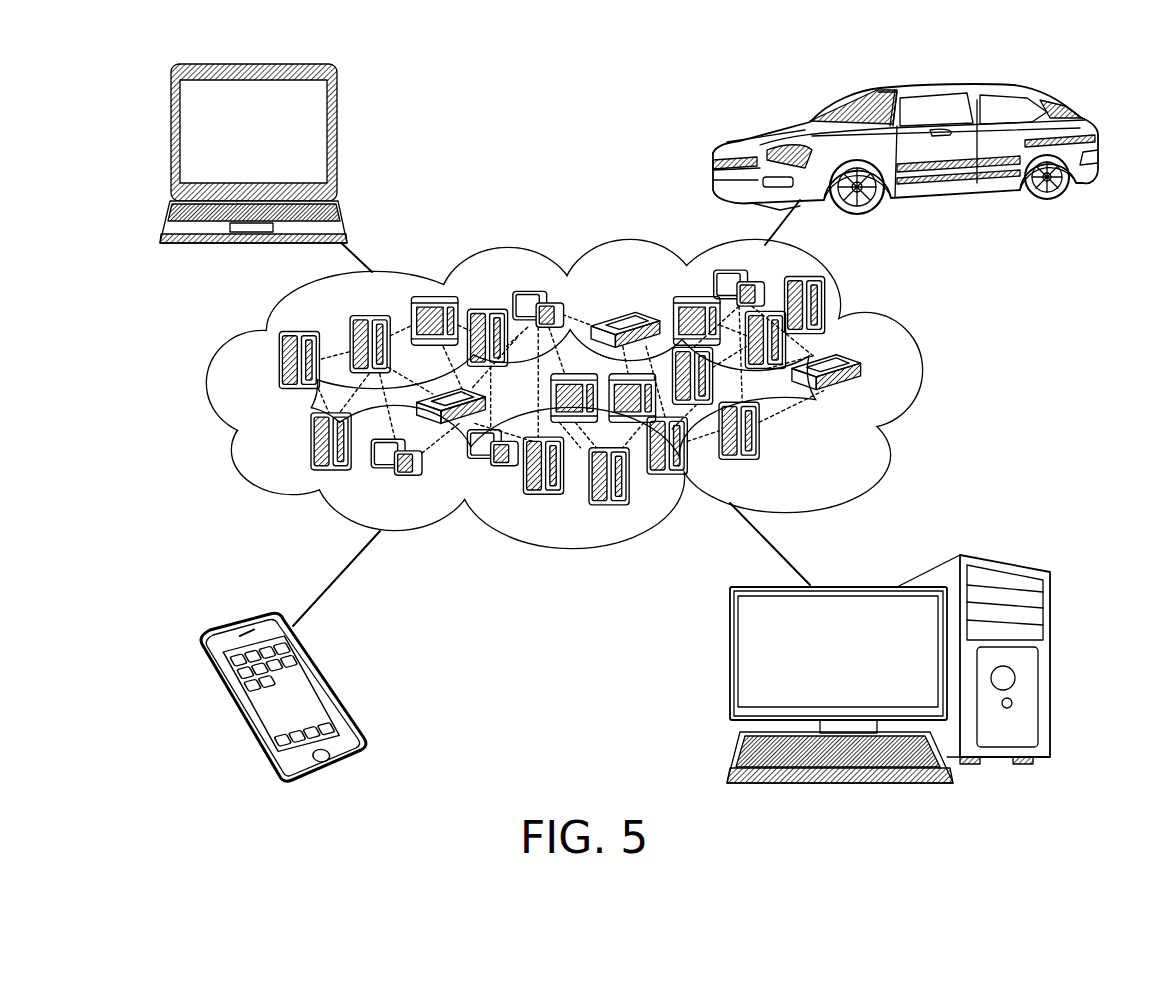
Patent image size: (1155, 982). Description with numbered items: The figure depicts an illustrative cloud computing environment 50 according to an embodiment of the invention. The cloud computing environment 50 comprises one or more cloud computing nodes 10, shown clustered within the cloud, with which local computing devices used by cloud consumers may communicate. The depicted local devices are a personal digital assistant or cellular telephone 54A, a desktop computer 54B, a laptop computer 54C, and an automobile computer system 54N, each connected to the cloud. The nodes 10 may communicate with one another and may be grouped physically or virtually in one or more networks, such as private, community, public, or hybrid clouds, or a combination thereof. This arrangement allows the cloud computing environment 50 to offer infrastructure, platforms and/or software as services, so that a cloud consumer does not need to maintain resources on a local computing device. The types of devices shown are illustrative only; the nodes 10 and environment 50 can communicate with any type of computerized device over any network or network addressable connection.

The cloud computing environment 50 is at (920, 375).
The cloud computing nodes 10 is at (905, 430).
The personal digital assistant (PDA) or cellular telephone 54A is at (310, 685).
The desktop computer 54B is at (902, 580).
The laptop computer 54C is at (312, 150).
The automobile computer system 54N is at (718, 158).